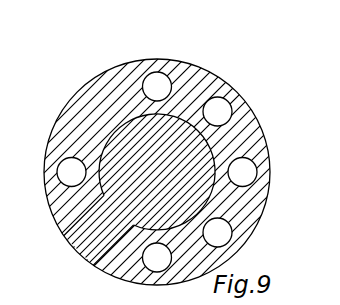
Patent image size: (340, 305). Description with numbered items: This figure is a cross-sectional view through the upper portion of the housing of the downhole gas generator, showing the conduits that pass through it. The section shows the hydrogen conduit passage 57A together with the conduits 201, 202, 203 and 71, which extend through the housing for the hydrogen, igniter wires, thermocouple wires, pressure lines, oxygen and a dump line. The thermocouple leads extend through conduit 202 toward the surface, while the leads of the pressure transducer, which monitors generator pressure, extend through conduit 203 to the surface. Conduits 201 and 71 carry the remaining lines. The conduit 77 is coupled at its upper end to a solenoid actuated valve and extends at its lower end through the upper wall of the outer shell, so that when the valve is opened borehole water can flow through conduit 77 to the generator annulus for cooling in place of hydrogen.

The hydrogen conduit passage 57A is at (154, 78).
The conduit 201 is at (215, 106).
The conduit 202 is at (242, 166).
The conduit 203 is at (217, 232).
The conduit 71 is at (157, 260).
The conduit 77 is at (68, 182).